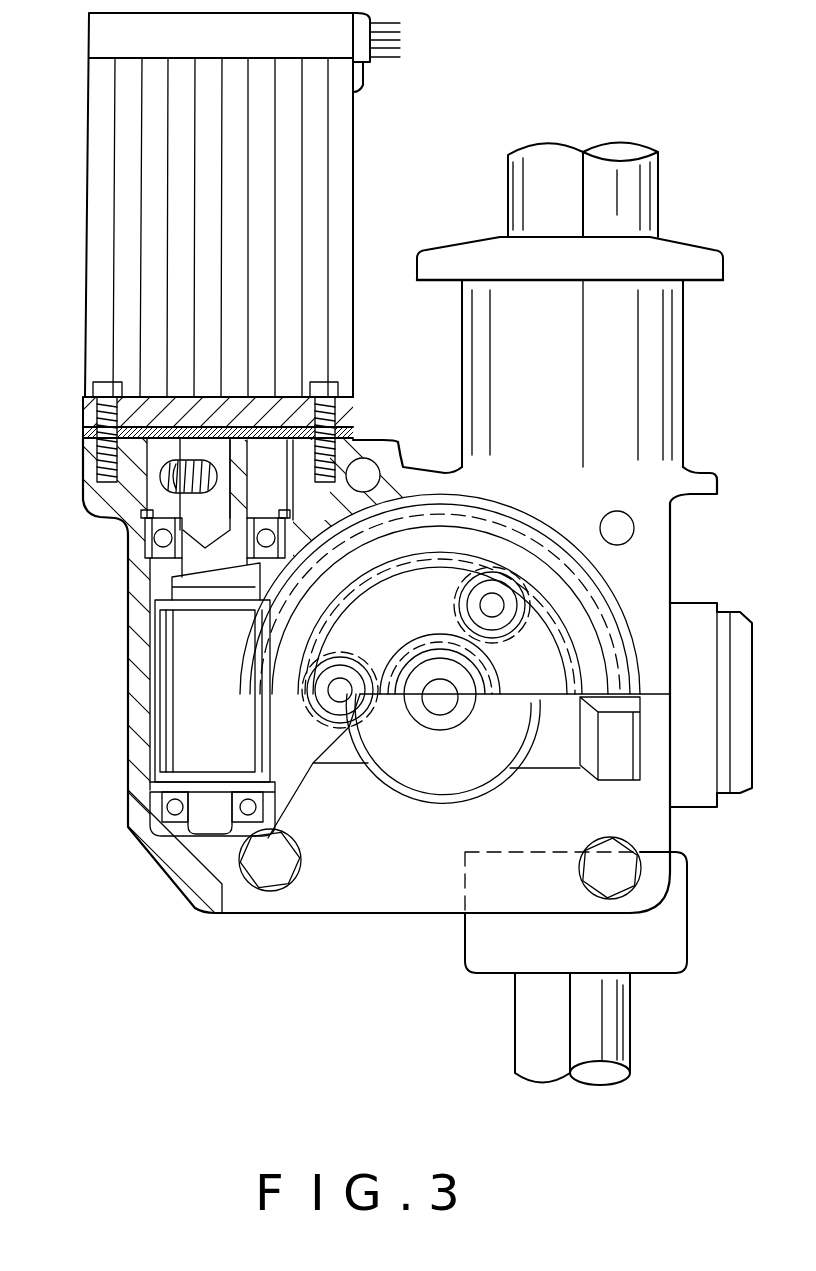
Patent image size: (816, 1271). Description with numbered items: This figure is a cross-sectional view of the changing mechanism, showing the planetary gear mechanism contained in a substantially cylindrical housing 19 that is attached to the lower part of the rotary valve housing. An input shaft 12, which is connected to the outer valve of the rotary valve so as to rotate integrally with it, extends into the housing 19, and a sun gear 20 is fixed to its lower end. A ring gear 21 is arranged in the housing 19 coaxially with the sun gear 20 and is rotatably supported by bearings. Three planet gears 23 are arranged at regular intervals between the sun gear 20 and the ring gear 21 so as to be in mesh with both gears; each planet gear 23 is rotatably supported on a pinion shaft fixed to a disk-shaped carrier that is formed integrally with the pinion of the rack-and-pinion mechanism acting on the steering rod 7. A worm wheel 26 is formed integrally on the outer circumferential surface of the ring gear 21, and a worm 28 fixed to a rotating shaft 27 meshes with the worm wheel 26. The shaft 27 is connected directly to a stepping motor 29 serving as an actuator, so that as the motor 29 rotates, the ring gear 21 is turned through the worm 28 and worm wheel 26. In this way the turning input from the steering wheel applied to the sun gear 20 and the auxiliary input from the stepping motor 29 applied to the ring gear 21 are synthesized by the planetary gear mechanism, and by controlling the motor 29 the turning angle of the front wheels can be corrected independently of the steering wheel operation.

The steering rod 7 is at (620, 1020).
The input shaft 12 is at (432, 722).
The housing 19 is at (670, 830).
The sun gear 20 is at (508, 678).
The ring gear 21 is at (565, 612).
The planet gear 23 is at (357, 665).
The worm wheel 26 is at (300, 803).
The rotating shaft 27 is at (190, 633).
The worm 28 is at (160, 740).
The stepping motor 29 is at (89, 235).